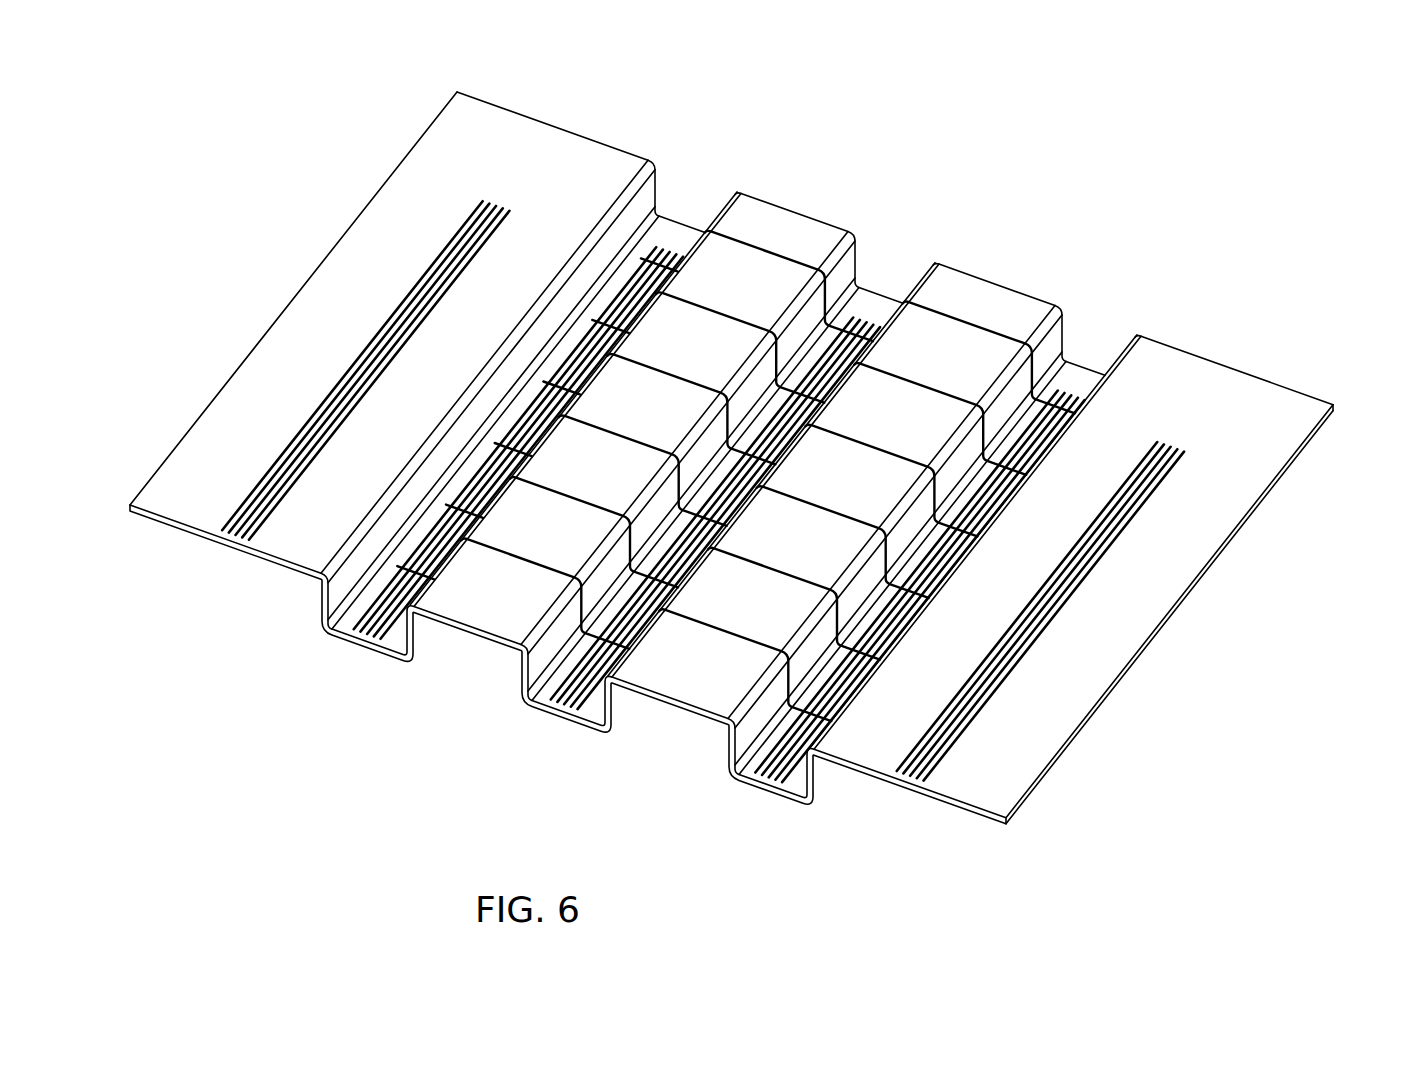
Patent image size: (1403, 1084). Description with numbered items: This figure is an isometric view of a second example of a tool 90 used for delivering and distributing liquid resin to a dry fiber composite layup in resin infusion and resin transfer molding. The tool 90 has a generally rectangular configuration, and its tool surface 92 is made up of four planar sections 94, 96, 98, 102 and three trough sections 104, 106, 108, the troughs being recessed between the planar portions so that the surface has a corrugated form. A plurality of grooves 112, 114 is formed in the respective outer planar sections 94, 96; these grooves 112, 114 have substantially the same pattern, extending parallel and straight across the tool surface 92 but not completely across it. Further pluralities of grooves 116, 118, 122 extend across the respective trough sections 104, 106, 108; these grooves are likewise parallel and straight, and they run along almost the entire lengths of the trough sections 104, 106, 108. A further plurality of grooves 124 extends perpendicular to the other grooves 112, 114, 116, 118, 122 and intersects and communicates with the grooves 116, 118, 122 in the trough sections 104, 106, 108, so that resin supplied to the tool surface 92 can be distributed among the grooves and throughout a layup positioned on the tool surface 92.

The tool 90 is at (1087, 228).
The tool surface 92 is at (1265, 422).
The planar section 94 is at (537, 142).
The planar section 96 is at (1207, 390).
The planar section 98 is at (782, 230).
The planar section 102 is at (980, 300).
The trough section 104 is at (665, 235).
The trough section 106 is at (867, 303).
The trough section 108 is at (1062, 377).
The grooves 112 is at (216, 546).
The grooves 114 is at (903, 782).
The grooves 116 is at (352, 645).
The grooves 118 is at (550, 717).
The grooves 122 is at (750, 787).
The grooves 124 is at (527, 563).